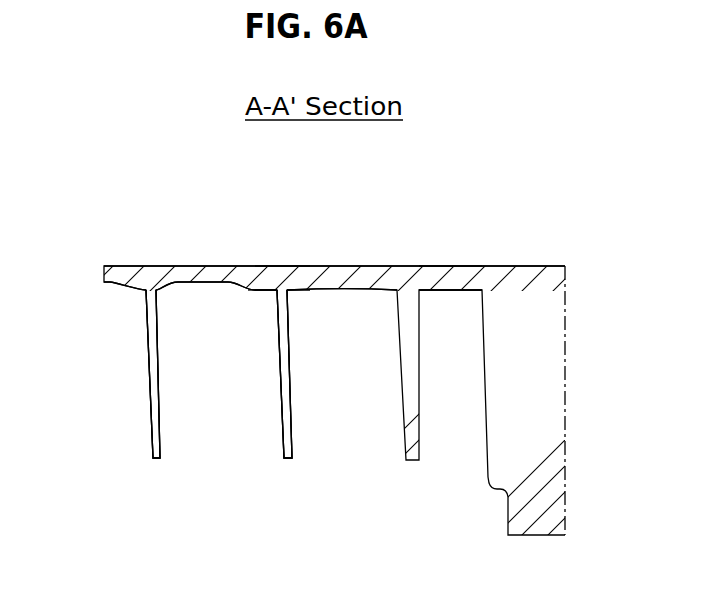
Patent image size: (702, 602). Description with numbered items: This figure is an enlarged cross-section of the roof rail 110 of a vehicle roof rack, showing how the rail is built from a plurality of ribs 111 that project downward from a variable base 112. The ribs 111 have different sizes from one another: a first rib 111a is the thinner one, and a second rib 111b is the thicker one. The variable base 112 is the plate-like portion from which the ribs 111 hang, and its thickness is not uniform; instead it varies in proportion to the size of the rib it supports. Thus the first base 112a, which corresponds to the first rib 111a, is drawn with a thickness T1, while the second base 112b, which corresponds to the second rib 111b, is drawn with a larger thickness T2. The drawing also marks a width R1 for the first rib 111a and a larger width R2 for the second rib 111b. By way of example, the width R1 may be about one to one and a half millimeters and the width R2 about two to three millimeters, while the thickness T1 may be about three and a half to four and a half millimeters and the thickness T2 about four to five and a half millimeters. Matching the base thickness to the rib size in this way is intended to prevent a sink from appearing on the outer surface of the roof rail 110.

The roof rail 110 is at (119, 240).
The ribs 111 is at (208, 544).
The first rib 111a is at (234, 415).
The second rib 111b is at (249, 415).
The variable base 112 is at (392, 190).
The first base 112a is at (281, 282).
The second base 112b is at (437, 282).
The thickness of the first base T1 is at (260, 308).
The thickness of the second base T2 is at (457, 318).
The width of the first rib R1 is at (284, 460).
The width of the second rib R2 is at (406, 462).